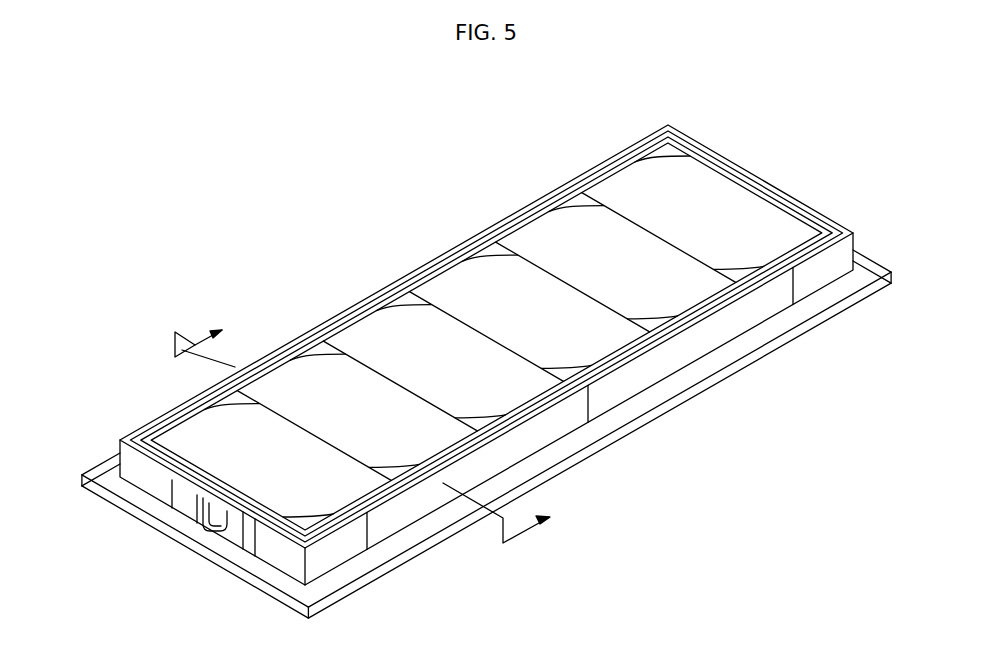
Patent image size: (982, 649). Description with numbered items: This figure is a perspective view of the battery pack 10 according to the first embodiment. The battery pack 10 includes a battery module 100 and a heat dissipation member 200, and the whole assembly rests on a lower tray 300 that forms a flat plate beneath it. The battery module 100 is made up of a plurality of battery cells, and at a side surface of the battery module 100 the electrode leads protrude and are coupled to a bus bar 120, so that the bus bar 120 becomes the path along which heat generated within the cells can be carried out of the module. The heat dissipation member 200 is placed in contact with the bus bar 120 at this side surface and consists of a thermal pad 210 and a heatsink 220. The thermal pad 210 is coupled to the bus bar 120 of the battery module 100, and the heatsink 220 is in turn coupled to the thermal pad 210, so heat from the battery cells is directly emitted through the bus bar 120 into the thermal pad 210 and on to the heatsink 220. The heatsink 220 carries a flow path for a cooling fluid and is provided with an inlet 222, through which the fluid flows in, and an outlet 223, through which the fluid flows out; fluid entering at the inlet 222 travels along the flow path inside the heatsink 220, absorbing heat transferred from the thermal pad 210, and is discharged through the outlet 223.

The battery pack 10 is at (352, 156).
The battery module 100 is at (755, 212).
The bus bar 120 is at (390, 285).
The heat dissipation member 200 is at (300, 248).
The thermal pad 210 is at (357, 303).
The heatsink 220 is at (314, 318).
The inlet 222 is at (155, 515).
The outlet 223 is at (200, 553).
The lower tray 300 is at (700, 368).